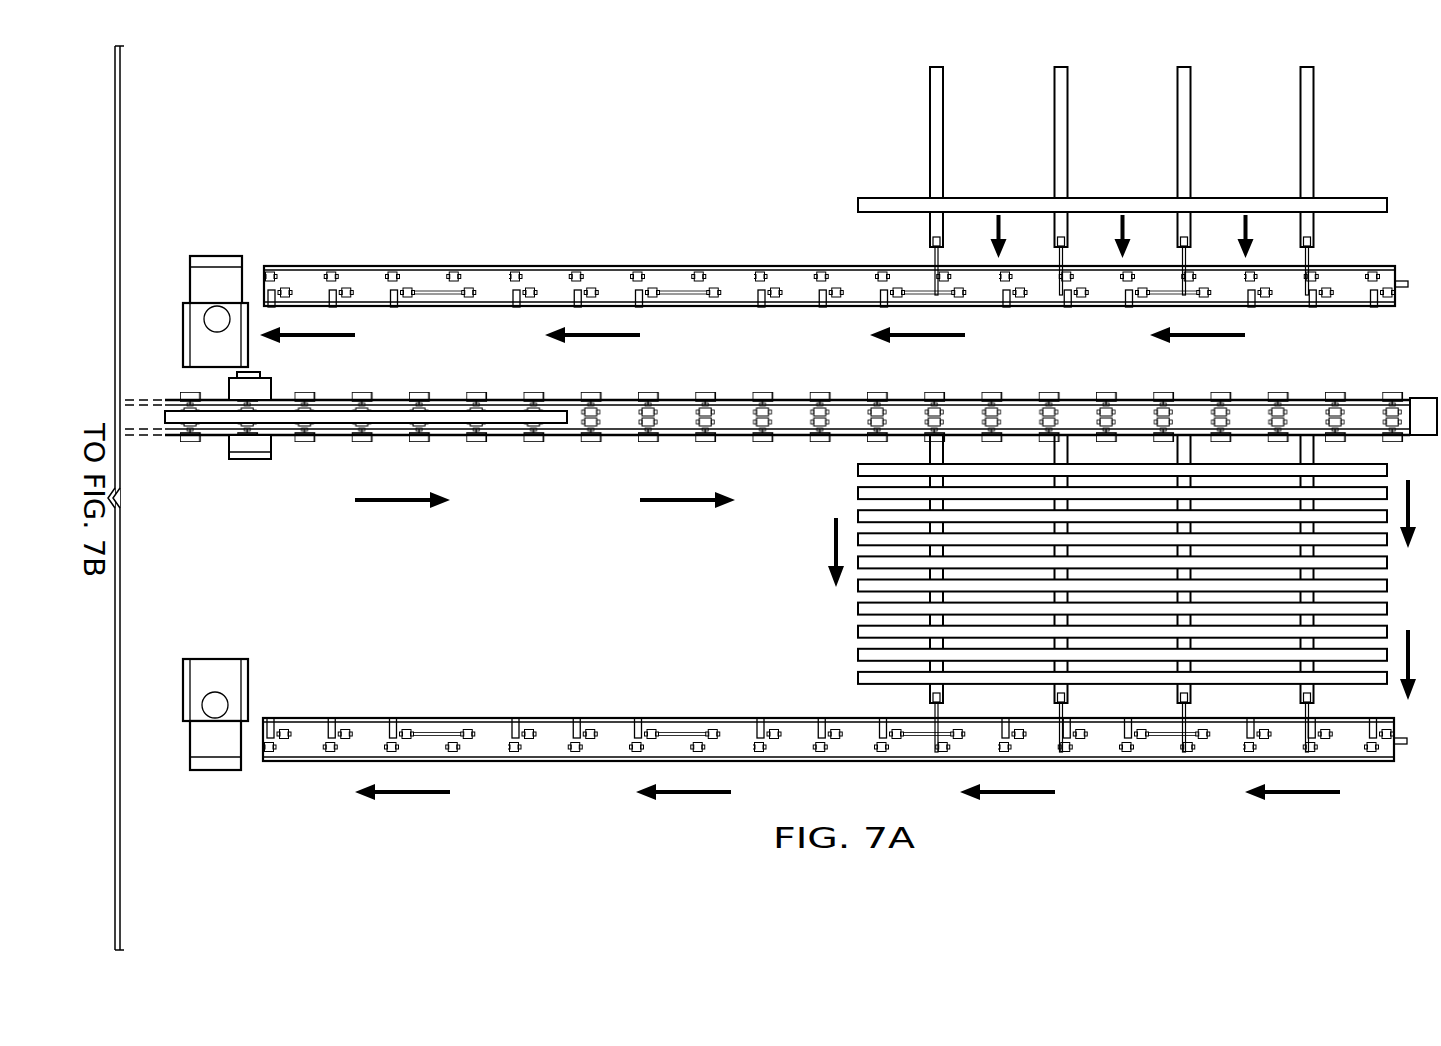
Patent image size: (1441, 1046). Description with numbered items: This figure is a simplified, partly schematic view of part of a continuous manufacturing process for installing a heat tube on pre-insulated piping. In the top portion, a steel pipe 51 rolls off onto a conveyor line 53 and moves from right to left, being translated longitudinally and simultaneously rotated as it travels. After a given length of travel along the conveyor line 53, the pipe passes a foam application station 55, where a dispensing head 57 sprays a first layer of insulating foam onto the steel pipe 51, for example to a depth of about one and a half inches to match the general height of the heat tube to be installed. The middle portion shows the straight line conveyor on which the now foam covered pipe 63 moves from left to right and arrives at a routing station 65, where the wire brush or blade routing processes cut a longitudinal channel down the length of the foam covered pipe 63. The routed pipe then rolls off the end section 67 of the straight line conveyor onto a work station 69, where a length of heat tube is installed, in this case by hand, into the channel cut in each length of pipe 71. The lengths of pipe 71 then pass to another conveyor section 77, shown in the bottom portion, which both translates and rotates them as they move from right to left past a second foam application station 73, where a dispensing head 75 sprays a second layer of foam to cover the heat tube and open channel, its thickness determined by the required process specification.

The steel pipe 51 is at (1351, 197).
The conveyor line 53 is at (1368, 263).
The foam application station 55 is at (183, 335).
The dispensing head 57 is at (213, 256).
The foam covered pipe 63 is at (508, 410).
The routing station 65 is at (245, 462).
The end section 67 is at (1305, 413).
The work station 69 is at (833, 610).
The length of pipe 71 is at (858, 653).
The second foam application station 73 is at (216, 659).
The dispensing head 75 is at (188, 740).
The conveyor section 77 is at (1160, 745).